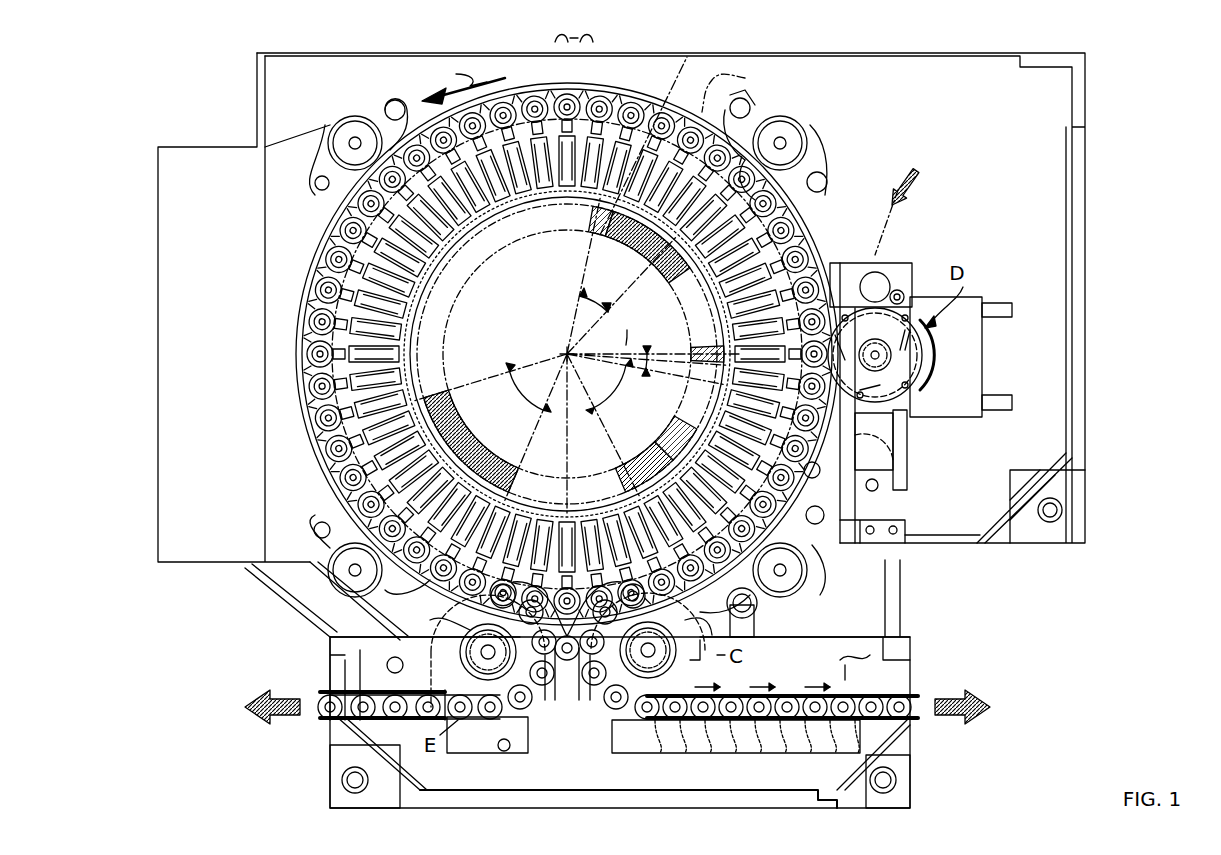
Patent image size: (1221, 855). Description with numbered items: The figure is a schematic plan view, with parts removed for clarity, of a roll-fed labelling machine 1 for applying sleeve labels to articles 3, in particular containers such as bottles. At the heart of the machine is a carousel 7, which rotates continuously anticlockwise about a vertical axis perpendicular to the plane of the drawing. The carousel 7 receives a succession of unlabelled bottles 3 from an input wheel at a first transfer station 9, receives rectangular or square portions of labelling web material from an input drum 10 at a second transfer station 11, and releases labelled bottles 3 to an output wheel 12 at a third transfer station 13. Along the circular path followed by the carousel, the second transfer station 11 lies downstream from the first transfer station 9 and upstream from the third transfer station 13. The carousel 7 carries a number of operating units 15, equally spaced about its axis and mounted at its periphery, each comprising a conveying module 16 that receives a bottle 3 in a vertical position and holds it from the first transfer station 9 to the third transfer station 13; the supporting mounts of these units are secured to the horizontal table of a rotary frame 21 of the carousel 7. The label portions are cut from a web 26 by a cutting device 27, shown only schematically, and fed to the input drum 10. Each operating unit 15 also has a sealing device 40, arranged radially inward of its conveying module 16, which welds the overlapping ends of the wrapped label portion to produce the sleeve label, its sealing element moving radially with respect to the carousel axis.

The roll-fed labelling machine 1 is at (1122, 98).
The articles 3 is at (730, 720).
The carousel 7 is at (296, 300).
The first transfer station 9 is at (652, 598).
The input drum 10 is at (925, 322).
The second transfer station 11 is at (835, 357).
The output wheel 12 is at (477, 690).
The third transfer station 13 is at (487, 607).
The operating units 15 is at (840, 426).
The conveying module 16 is at (820, 482).
The rotary frame 21 is at (567, 612).
The web 26 is at (880, 262).
The cutting device 27 is at (897, 290).
The sealing device 40 is at (703, 213).